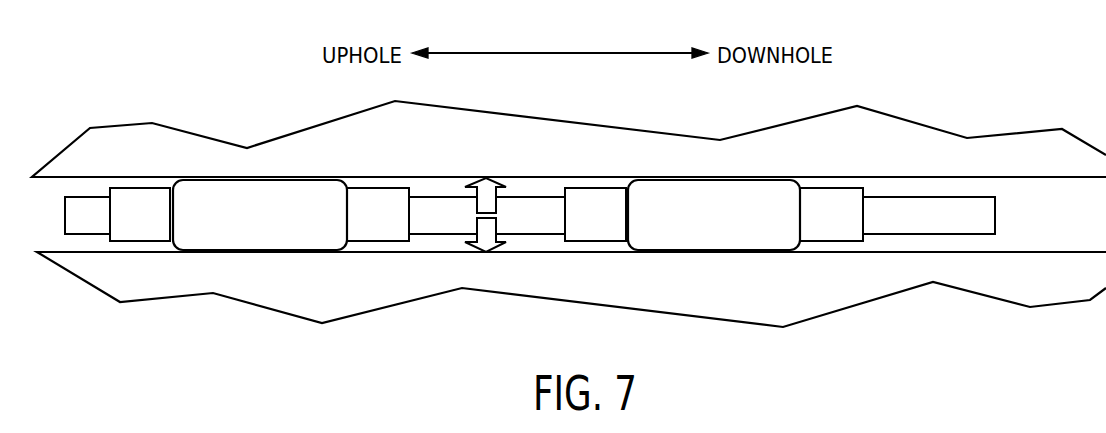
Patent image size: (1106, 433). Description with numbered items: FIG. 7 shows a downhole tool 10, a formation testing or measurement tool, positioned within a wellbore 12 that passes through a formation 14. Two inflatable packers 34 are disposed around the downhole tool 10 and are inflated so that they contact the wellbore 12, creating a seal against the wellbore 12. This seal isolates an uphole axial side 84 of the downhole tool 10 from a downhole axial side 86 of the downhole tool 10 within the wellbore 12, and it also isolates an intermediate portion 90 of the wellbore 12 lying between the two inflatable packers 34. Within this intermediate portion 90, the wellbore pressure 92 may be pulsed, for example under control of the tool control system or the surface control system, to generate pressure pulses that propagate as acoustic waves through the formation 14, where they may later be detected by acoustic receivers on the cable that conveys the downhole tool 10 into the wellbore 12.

The downhole tool 10 is at (545, 247).
The wellbore 12 is at (968, 252).
The formation 14 is at (421, 156).
The inflatable packers 34 is at (255, 225).
The uphole axial side 84 is at (49, 230).
The downhole axial side 86 is at (1063, 226).
The intermediate portion 90 is at (528, 188).
The wellbore pressure 92 is at (486, 243).